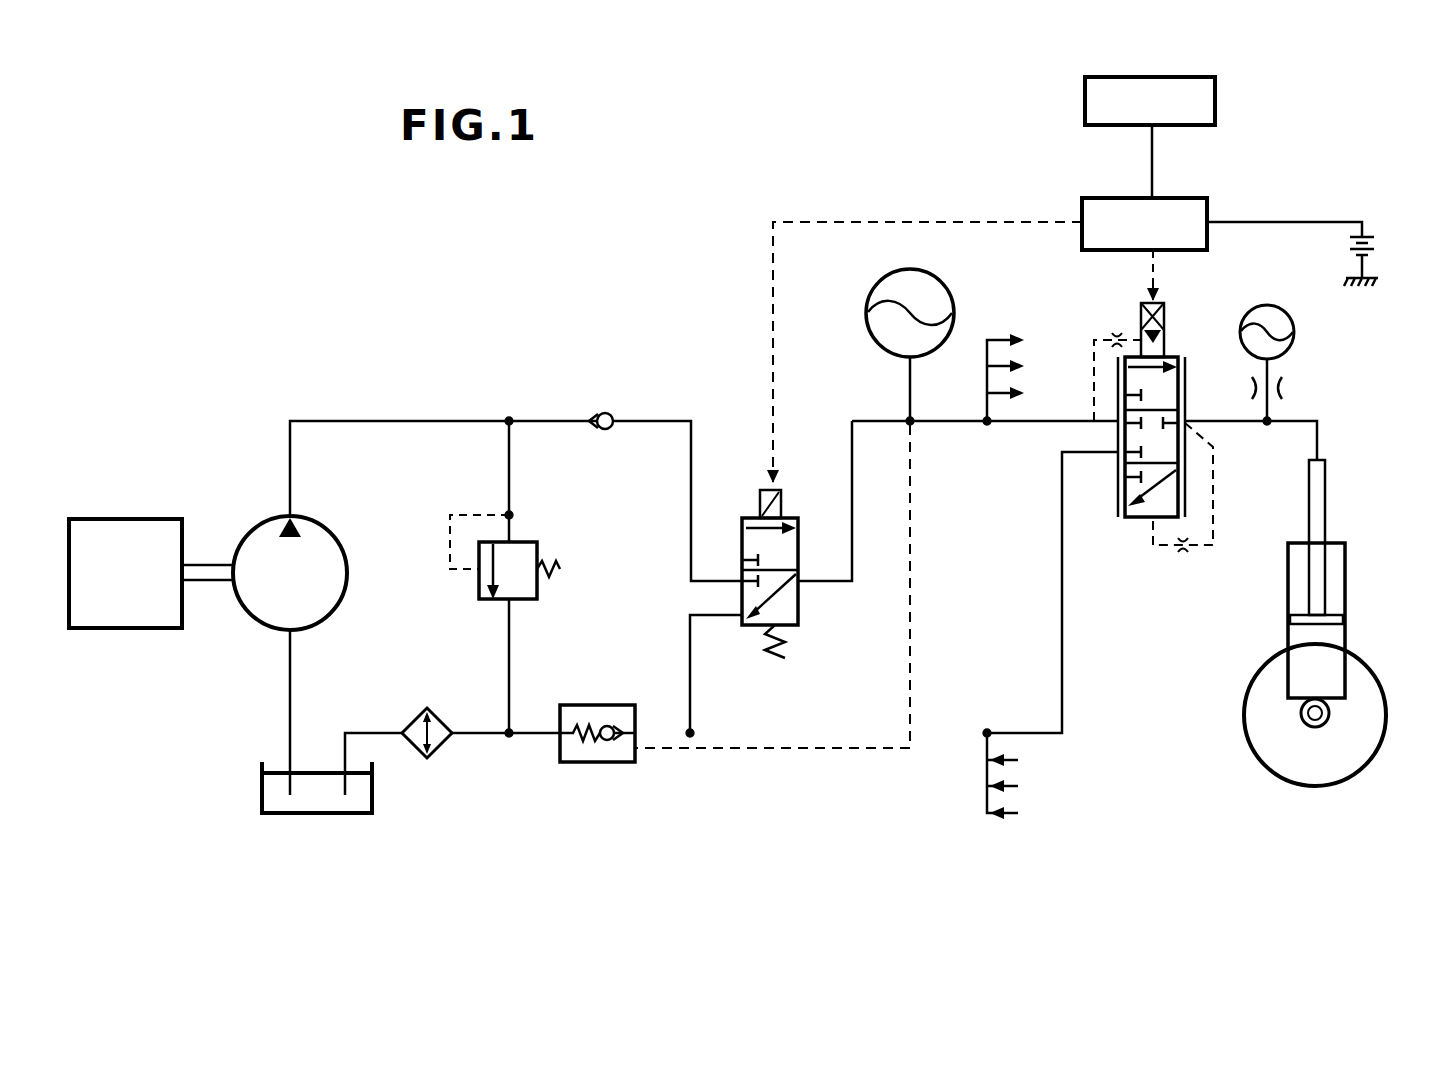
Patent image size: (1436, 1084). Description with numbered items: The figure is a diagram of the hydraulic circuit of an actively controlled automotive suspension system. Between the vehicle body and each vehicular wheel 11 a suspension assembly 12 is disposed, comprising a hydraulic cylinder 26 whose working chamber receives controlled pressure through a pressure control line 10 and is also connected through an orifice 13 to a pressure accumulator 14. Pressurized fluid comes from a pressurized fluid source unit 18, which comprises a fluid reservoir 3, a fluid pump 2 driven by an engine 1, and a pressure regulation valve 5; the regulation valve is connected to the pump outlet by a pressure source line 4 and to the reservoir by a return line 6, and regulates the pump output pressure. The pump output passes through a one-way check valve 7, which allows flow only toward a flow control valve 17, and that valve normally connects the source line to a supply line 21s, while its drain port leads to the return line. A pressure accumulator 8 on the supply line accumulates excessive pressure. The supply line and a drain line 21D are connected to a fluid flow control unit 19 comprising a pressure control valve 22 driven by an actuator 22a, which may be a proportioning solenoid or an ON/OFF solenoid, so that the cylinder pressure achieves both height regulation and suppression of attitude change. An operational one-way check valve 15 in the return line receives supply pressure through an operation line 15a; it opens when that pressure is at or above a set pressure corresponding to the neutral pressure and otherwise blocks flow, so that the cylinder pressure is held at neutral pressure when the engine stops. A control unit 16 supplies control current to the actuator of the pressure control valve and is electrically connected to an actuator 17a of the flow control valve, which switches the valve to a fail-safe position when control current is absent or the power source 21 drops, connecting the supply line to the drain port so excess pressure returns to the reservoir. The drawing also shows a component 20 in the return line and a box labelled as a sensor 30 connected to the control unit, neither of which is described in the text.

The engine 1 is at (140, 512).
The fluid pump 2 is at (336, 520).
The fluid reservoir 3 is at (320, 818).
The pressure source line 4 is at (395, 418).
The pressure regulation valve 5 is at (545, 540).
The return line 6 is at (487, 740).
The one-way check valve 7 is at (610, 410).
The pressure accumulator 8 is at (960, 302).
The pressure control line 10 is at (1322, 416).
The vehicular wheel 11 is at (1258, 762).
The suspension assembly 12 is at (1352, 574).
The orifice 13 is at (1288, 412).
The pressure accumulator 14 is at (1282, 306).
The operational one-way check valve 15 is at (608, 768).
The operation line 15a is at (915, 580).
The control unit 16 is at (1158, 196).
The flow control valve 17 is at (802, 626).
The actuator 17a is at (780, 486).
The pressurized fluid source unit 18 is at (255, 655).
The fluid flow control unit 19 is at (1133, 522).
The filter 20 is at (432, 762).
The power source 21 is at (1376, 250).
The supply line 21s is at (1025, 425).
The drain line 21D is at (1062, 672).
The pressure control valve 22 is at (1160, 442).
The actuator 22a is at (1172, 322).
The hydraulic cylinder 26 is at (1333, 642).
The sensor 30 is at (1220, 98).